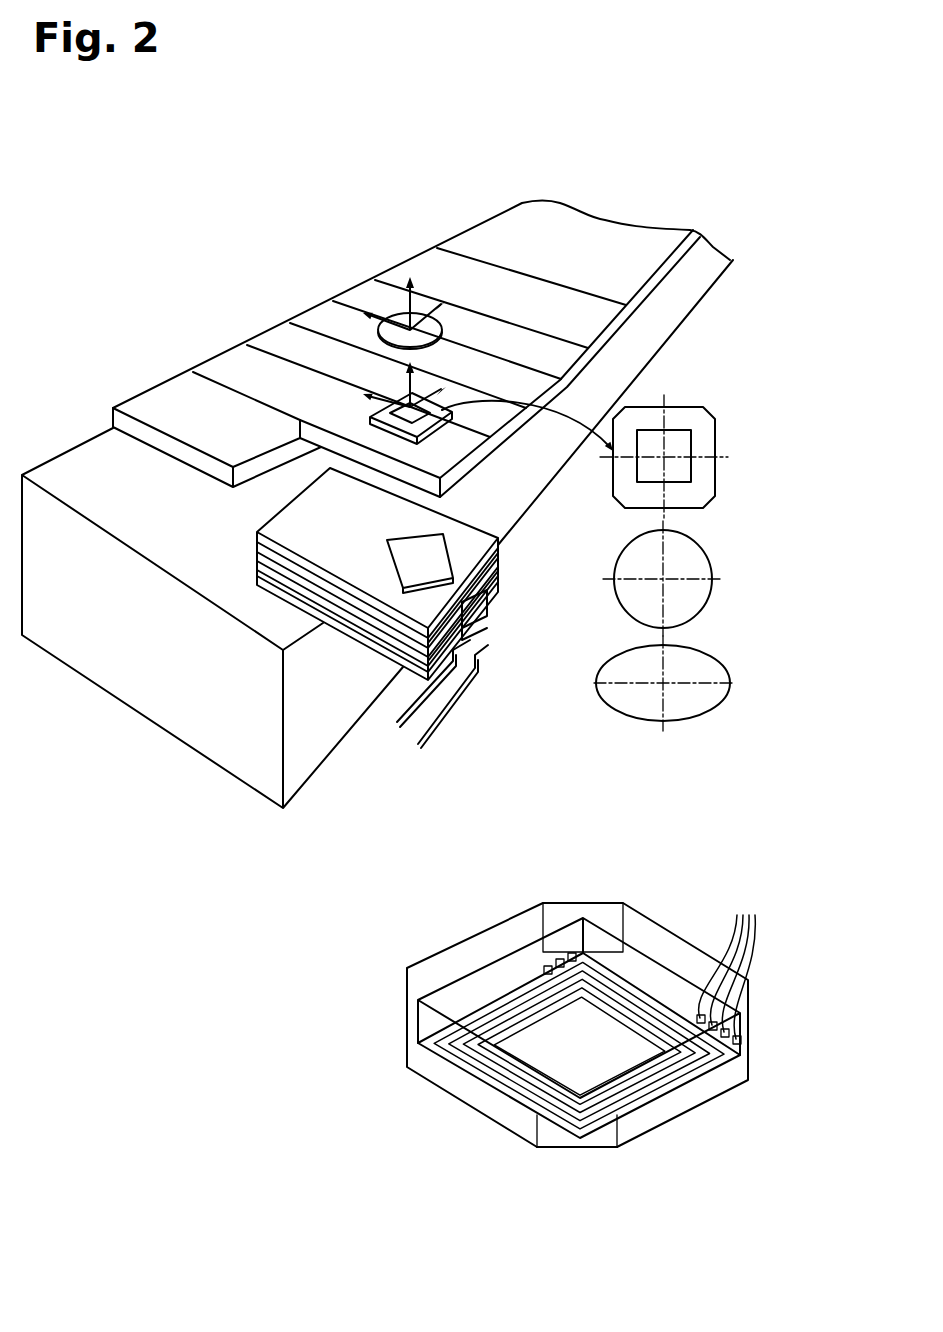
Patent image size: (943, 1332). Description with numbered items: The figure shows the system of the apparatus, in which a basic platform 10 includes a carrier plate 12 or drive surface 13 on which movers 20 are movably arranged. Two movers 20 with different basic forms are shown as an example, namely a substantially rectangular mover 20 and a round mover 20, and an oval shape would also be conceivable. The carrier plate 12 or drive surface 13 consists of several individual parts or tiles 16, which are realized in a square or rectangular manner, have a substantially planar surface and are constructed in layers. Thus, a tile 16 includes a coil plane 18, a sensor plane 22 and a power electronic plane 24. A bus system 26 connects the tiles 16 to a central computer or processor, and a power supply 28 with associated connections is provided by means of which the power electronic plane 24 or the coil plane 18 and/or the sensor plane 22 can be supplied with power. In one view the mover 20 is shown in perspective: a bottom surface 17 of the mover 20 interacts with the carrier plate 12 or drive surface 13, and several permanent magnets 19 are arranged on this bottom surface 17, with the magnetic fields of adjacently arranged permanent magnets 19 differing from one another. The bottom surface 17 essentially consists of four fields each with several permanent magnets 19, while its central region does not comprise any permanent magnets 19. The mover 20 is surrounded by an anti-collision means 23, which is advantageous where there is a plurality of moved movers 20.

The basic platform 10 is at (107, 467).
The carrier plate 12 is at (235, 380).
The drive surface 13 is at (422, 188).
The tile 16 is at (568, 378).
The bottom surface 17 is at (564, 1172).
The coil plane 18 is at (490, 578).
The permanent magnets 19 is at (637, 983).
The mover 20 is at (400, 314).
The sensor plane 22 is at (485, 593).
The anti-collision means 23 is at (413, 985).
The power electronic plane 24 is at (467, 633).
The bus system 26 is at (406, 726).
The power supply 28 is at (447, 714).